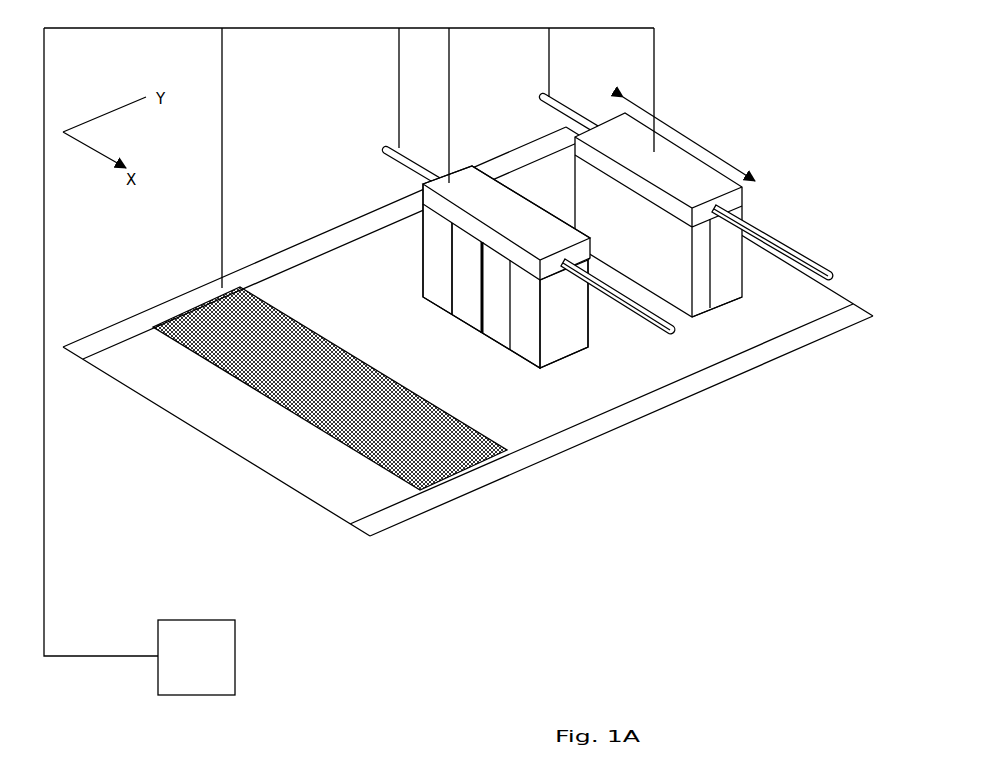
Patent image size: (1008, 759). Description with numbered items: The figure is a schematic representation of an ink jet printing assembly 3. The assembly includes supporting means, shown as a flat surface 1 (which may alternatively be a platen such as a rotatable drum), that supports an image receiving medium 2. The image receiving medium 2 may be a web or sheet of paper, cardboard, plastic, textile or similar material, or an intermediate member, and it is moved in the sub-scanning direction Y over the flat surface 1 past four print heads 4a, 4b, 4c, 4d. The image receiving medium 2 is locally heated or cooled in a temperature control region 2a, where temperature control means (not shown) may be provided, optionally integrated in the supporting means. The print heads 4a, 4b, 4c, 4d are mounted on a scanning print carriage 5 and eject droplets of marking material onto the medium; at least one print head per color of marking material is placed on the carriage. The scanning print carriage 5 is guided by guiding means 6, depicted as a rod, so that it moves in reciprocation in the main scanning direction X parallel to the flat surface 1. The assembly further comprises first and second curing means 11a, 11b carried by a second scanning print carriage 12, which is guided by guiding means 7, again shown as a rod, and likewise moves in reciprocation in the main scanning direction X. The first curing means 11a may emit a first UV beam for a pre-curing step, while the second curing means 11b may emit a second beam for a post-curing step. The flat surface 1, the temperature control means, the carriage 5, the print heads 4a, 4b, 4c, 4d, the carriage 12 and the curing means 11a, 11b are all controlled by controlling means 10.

The flat surface 1 is at (378, 526).
The image receiving medium 2 is at (320, 490).
The temperature control region 2a is at (445, 462).
The ink jet printing assembly 3 is at (634, 474).
The print head 4a is at (442, 274).
The print head 4b is at (472, 310).
The print head 4c is at (488, 330).
The print head 4d is at (560, 330).
The scanning print carriage 5 is at (463, 180).
The guiding means 6 is at (396, 158).
The guiding means 7 is at (784, 233).
The controlling means 10 is at (199, 664).
The first curing means 11a is at (703, 310).
The second curing means 11b is at (723, 288).
The scanning print carriage 12 is at (693, 167).